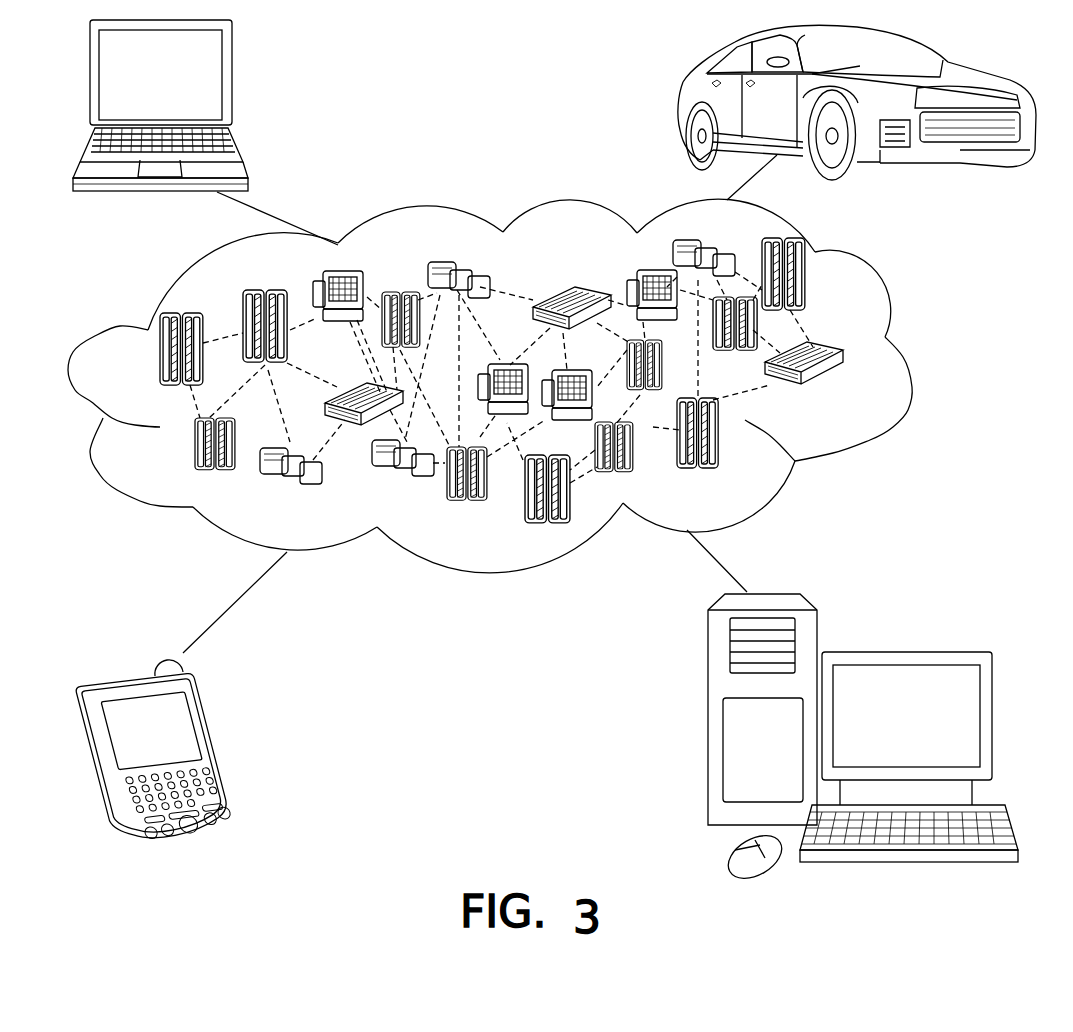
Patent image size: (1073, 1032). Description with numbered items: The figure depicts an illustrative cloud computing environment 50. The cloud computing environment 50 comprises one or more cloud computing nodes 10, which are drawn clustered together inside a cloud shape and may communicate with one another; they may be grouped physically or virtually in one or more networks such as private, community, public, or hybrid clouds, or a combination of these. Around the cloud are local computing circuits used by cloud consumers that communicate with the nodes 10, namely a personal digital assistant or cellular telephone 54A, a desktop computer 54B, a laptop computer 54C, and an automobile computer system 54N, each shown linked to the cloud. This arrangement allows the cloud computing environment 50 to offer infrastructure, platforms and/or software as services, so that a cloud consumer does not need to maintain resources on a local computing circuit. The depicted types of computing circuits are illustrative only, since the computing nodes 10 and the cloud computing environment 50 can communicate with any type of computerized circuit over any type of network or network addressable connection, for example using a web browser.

The cloud computing node 10 is at (848, 390).
The cloud computing environment 50 is at (913, 360).
The personal digital assistant (PDA) or cellular telephone 54A is at (222, 740).
The desktop computer 54B is at (905, 650).
The laptop computer 54C is at (232, 87).
The automobile computer system 54N is at (680, 102).